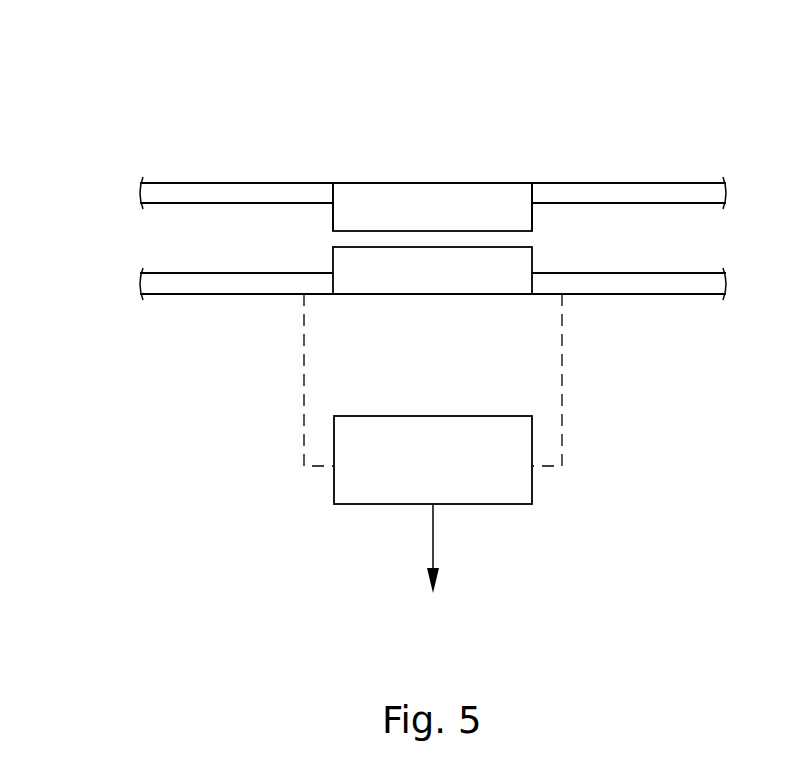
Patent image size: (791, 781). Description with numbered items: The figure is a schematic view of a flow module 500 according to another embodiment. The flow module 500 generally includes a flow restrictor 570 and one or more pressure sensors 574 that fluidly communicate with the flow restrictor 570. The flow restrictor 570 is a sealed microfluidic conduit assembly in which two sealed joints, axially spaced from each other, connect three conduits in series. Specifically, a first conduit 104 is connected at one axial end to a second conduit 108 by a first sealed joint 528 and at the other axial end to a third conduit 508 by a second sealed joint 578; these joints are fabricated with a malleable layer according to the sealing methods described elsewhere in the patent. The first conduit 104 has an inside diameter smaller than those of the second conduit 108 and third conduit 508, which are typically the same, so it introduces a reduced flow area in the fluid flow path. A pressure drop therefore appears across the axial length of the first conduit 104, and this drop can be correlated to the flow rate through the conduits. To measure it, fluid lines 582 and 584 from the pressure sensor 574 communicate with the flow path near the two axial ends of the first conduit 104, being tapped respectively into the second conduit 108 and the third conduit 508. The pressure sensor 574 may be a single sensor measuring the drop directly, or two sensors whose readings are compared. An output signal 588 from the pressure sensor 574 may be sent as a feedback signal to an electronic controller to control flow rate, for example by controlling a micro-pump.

The flow module 500 is at (78, 86).
The second conduit 108 is at (188, 183).
The third conduit 508 is at (670, 183).
The first conduit 104 is at (404, 183).
The first sealed joint 528 is at (340, 133).
The flow restrictor 570 is at (496, 97).
The second sealed joint 578 is at (539, 147).
The fluid line 582 is at (303, 384).
The fluid line 584 is at (562, 375).
The pressure sensor 574 is at (433, 460).
The output signal 588 is at (433, 539).